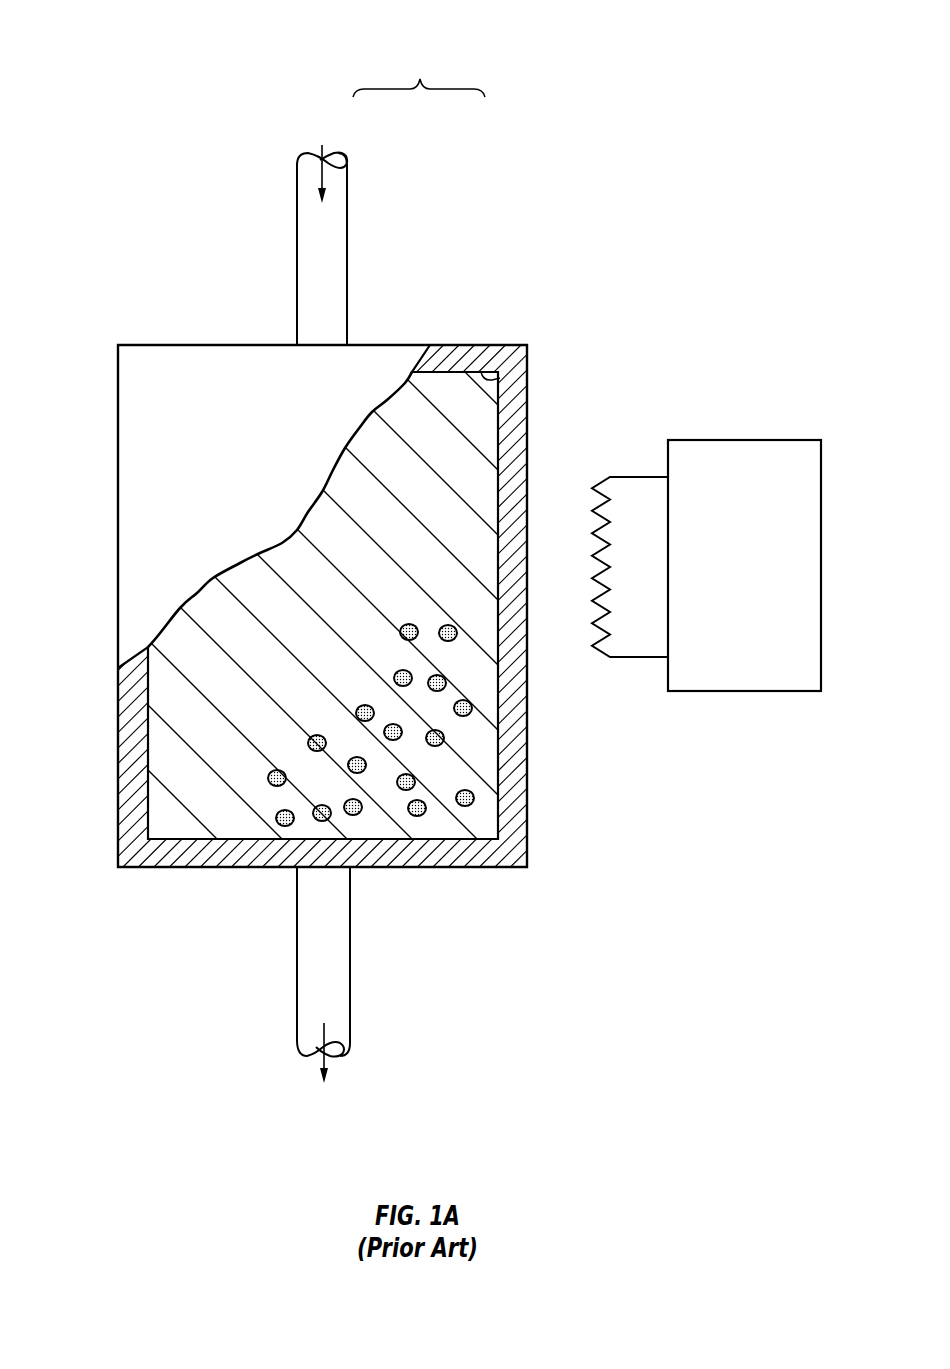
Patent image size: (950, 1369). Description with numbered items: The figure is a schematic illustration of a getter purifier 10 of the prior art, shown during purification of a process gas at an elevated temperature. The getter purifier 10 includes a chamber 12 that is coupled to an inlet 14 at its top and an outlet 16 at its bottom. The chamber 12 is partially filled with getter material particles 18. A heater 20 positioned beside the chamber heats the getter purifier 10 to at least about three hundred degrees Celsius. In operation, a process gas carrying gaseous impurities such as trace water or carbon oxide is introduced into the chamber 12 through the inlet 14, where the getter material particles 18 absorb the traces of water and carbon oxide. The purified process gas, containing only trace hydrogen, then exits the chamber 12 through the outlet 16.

The getter purifier 10 is at (124, 84).
The chamber 12 is at (506, 376).
The inlet 14 is at (348, 283).
The outlet 16 is at (297, 962).
The getter material particles 18 is at (474, 799).
The heater 20 is at (821, 565).